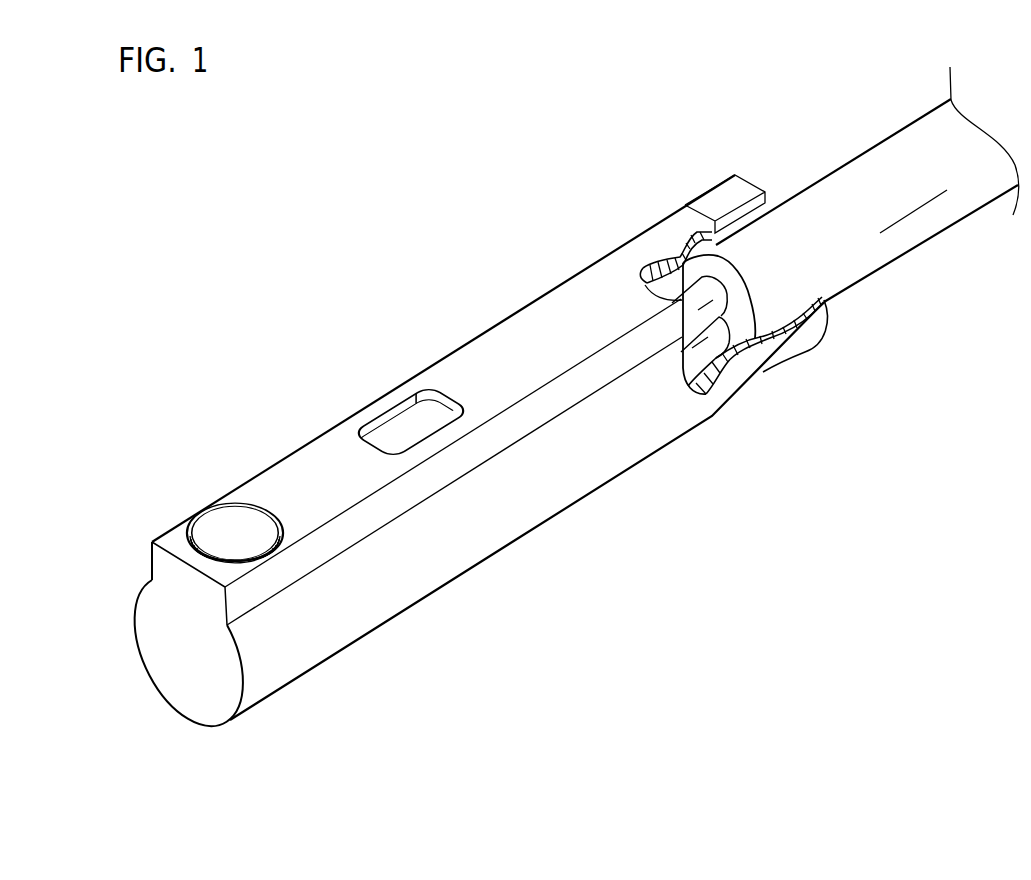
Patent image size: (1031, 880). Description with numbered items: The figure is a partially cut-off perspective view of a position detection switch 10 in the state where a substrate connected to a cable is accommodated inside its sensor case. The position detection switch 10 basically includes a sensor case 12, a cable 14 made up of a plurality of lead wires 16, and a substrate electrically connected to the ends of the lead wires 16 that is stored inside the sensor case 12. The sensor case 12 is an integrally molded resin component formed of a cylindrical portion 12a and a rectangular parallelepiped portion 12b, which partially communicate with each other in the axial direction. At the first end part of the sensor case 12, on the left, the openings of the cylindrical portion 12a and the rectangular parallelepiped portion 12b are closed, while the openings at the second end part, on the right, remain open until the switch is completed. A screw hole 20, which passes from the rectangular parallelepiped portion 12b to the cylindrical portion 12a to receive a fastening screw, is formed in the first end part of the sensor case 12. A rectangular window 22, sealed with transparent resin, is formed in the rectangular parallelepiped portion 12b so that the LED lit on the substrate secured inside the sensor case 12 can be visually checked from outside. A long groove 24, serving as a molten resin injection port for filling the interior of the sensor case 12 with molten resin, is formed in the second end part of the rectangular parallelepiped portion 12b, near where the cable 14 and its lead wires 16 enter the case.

The position detection switch 10 is at (412, 154).
The sensor case 12 is at (514, 328).
The cylindrical portion 12a is at (389, 586).
The rectangular parallelepiped portion 12b is at (300, 476).
The cable 14 is at (842, 182).
The lead wires 16 is at (690, 355).
The screw hole 20 is at (220, 527).
The rectangular window 22 is at (405, 425).
The long groove 24 is at (730, 218).